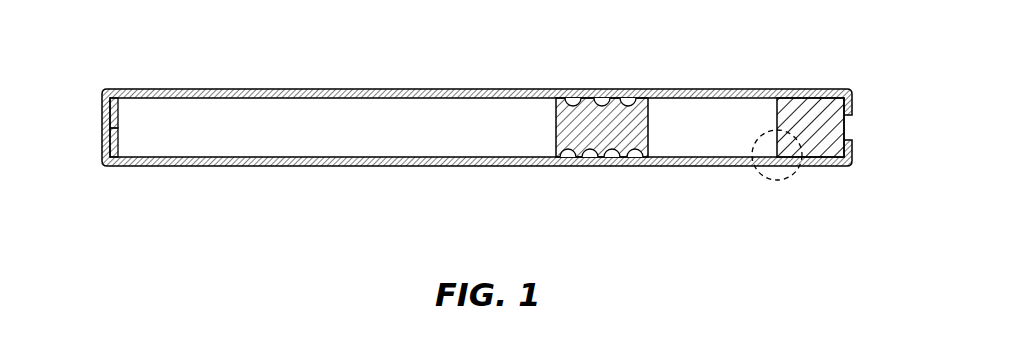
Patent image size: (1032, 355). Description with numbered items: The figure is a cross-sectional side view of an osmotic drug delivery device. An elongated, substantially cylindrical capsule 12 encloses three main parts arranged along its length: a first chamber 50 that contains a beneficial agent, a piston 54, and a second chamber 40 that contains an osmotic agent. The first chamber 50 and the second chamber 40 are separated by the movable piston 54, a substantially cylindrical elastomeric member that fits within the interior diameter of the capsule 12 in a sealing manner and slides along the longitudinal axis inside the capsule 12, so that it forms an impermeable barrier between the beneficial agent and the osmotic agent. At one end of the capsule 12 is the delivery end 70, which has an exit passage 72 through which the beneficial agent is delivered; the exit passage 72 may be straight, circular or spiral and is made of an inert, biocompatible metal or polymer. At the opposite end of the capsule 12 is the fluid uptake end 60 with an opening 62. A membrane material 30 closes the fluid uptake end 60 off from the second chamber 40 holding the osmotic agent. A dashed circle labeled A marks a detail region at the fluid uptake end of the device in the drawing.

The capsule 12 is at (205, 167).
The first chamber 50 is at (214, 111).
The exit passage 72 is at (104, 128).
The delivery end 70 is at (104, 157).
The piston 54 is at (556, 100).
The second chamber 40 is at (673, 110).
The membrane material 30 is at (812, 95).
The opening 62 is at (850, 127).
The fluid uptake end 60 is at (850, 153).
The detail region A is at (788, 180).